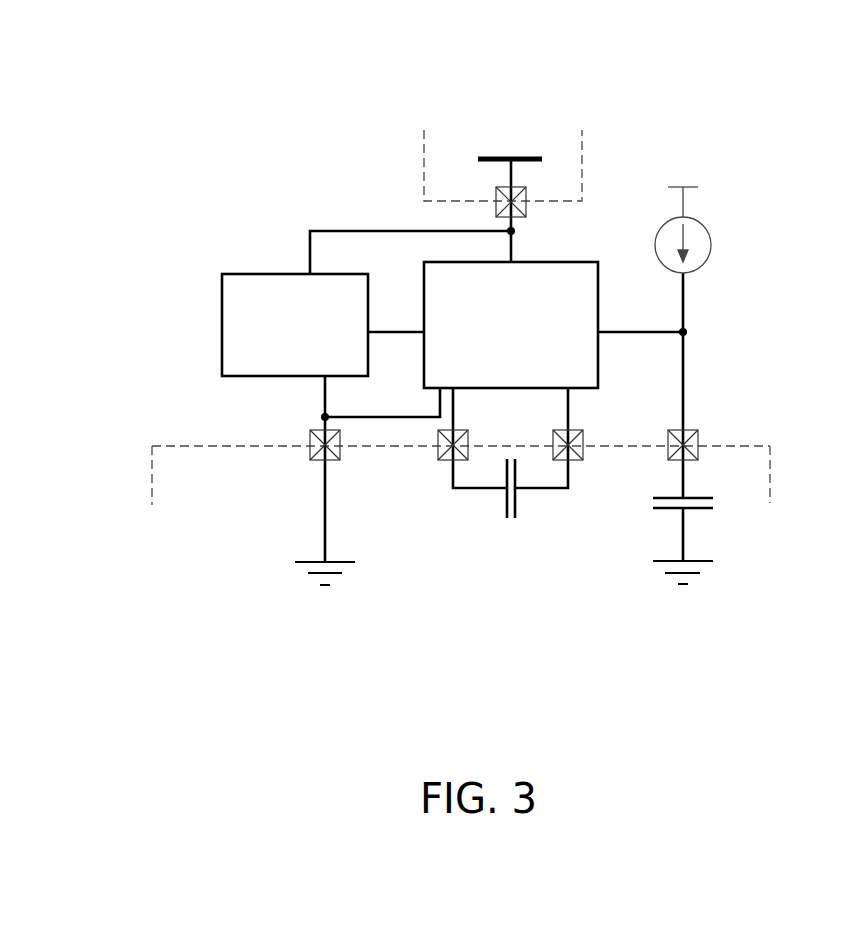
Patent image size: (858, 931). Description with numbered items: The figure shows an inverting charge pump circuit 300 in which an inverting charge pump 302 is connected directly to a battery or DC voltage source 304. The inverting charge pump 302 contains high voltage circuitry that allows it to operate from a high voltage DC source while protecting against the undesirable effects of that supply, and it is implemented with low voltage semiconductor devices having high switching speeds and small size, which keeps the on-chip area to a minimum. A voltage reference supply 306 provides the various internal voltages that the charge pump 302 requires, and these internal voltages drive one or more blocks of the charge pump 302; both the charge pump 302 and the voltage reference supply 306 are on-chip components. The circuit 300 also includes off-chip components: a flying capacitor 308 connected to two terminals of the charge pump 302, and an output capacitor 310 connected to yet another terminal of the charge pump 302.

The inverting charge pump circuit 300 is at (212, 84).
The inverting charge pump 302 is at (577, 261).
The battery or DC voltage source 304 is at (540, 157).
The voltage reference supply 306 is at (250, 272).
The flying capacitor 308 is at (504, 505).
The output capacitor 310 is at (702, 509).